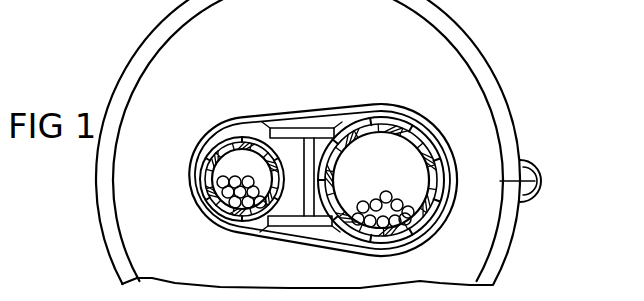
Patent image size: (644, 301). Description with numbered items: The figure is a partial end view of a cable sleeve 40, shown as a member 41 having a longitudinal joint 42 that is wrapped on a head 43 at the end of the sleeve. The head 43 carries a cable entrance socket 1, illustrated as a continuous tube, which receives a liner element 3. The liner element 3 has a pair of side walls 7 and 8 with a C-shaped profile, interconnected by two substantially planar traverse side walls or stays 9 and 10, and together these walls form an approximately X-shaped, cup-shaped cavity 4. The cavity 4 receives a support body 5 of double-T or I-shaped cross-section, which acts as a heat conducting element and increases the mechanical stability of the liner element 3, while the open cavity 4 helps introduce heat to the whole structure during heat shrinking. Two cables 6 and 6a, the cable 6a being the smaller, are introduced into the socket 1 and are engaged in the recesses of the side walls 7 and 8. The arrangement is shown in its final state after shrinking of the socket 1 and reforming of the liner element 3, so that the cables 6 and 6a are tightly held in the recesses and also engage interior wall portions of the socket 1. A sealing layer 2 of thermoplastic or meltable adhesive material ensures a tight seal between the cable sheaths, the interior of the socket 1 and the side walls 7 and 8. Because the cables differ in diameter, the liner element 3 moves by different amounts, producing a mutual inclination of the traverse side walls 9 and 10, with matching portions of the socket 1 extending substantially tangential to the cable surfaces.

The cable entrance socket 1 is at (437, 147).
The sealing layer 2 is at (407, 112).
The liner element 3 is at (287, 130).
The cavity 4 is at (325, 129).
The support body 5 is at (309, 137).
The cable 6 is at (412, 183).
The cable 6a is at (238, 165).
The side wall 7 is at (313, 222).
The side wall 8 is at (290, 221).
The traverse side wall 9 is at (297, 132).
The traverse side wall 10 is at (307, 224).
The cable sleeve 40 is at (99, 236).
The member 41 is at (505, 238).
The longitudinal joint 42 is at (522, 161).
The head 43 is at (195, 251).